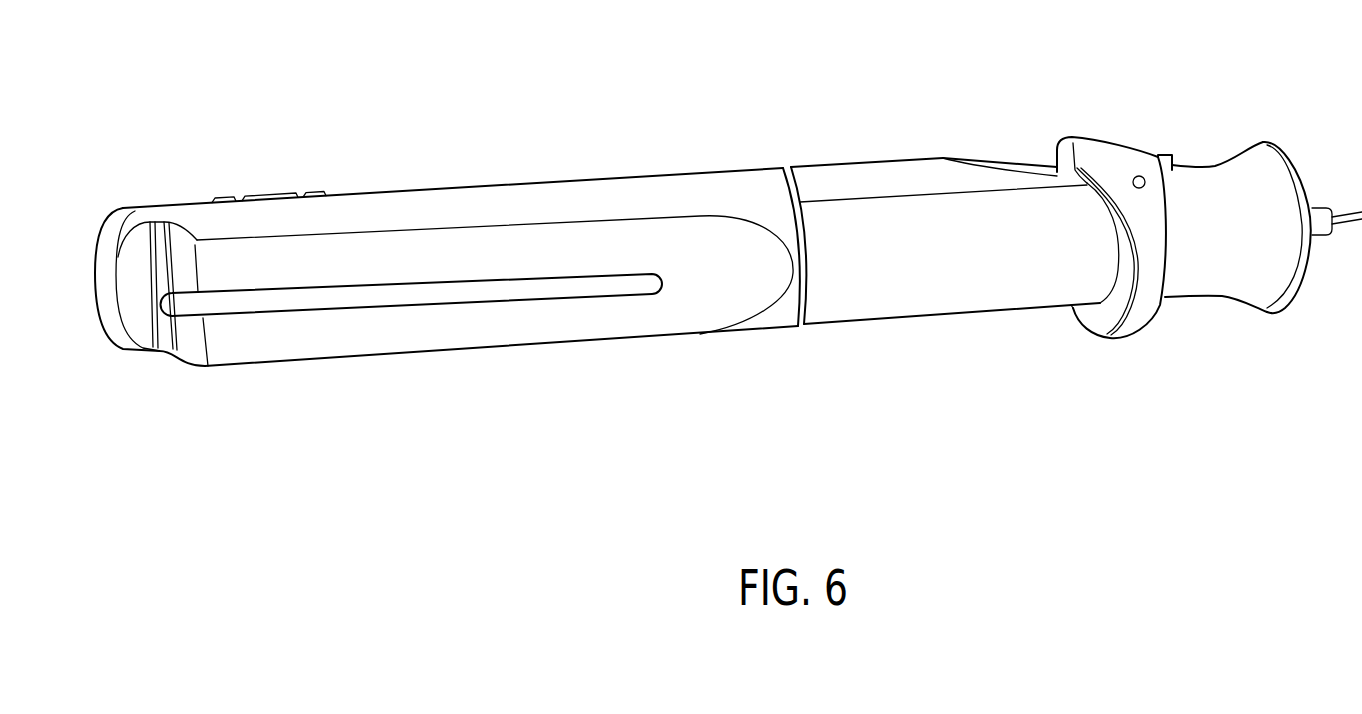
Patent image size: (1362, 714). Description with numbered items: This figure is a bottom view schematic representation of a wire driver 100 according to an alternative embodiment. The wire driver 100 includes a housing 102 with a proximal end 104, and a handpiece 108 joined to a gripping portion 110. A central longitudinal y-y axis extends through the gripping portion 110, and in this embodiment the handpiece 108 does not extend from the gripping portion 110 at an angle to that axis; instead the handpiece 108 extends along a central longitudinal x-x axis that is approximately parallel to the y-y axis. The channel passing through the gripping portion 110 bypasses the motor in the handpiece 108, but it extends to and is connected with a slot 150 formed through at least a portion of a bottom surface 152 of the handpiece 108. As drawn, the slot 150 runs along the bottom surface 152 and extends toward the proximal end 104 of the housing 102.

The wire driver 100 is at (728, 257).
The housing 102 is at (853, 370).
The proximal end 104 is at (138, 401).
The handpiece 108 is at (378, 191).
The gripping portion 110 is at (1013, 293).
The slot 150 is at (545, 285).
The bottom surface 152 is at (693, 305).